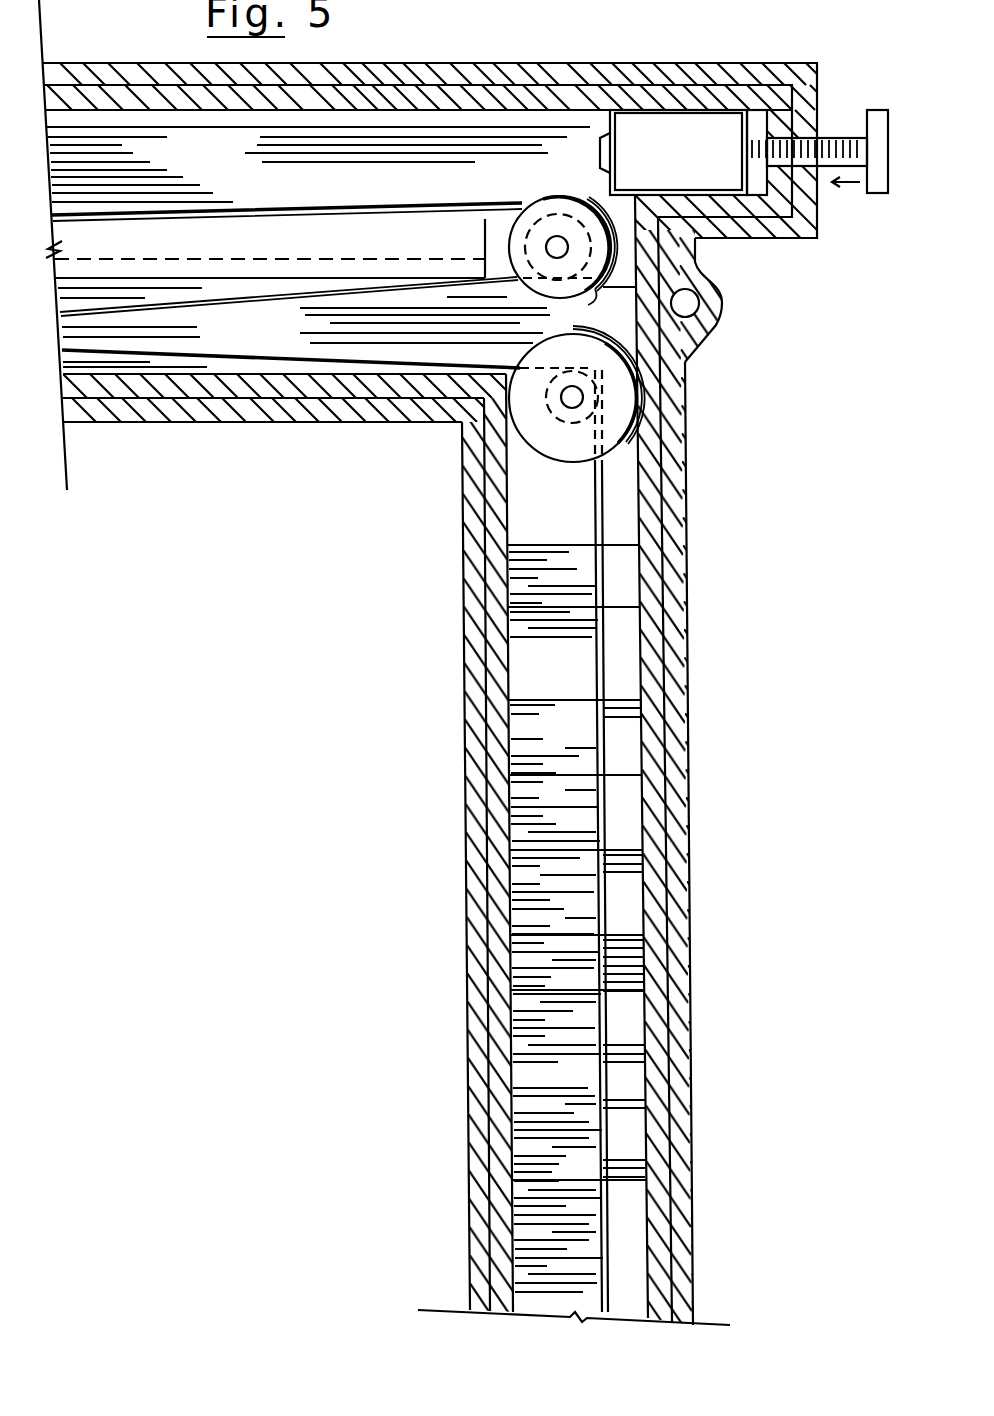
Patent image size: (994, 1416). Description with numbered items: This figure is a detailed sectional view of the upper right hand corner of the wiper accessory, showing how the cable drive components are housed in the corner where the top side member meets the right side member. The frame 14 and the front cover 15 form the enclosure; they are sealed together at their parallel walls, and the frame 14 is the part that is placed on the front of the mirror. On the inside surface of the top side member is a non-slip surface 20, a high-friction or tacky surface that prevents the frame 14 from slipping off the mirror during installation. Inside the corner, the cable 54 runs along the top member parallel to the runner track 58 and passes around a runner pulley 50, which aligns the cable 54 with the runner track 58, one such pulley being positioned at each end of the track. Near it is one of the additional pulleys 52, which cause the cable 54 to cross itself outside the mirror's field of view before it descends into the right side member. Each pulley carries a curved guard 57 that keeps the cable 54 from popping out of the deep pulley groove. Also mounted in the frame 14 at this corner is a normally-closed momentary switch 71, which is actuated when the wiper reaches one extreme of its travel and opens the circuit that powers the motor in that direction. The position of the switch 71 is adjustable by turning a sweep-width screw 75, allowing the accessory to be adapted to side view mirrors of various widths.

The frame 14 is at (470, 1312).
The front cover 15 is at (498, 1315).
The non-slip surface 20 is at (300, 422).
The runner pulley 50 is at (550, 194).
The additional pulley 52 is at (578, 460).
The cable 54 is at (260, 212).
The curved guard 57 is at (612, 338).
The runner track 58 is at (306, 253).
The momentary switch 71 is at (702, 168).
The sweep-width screw 75 is at (884, 110).